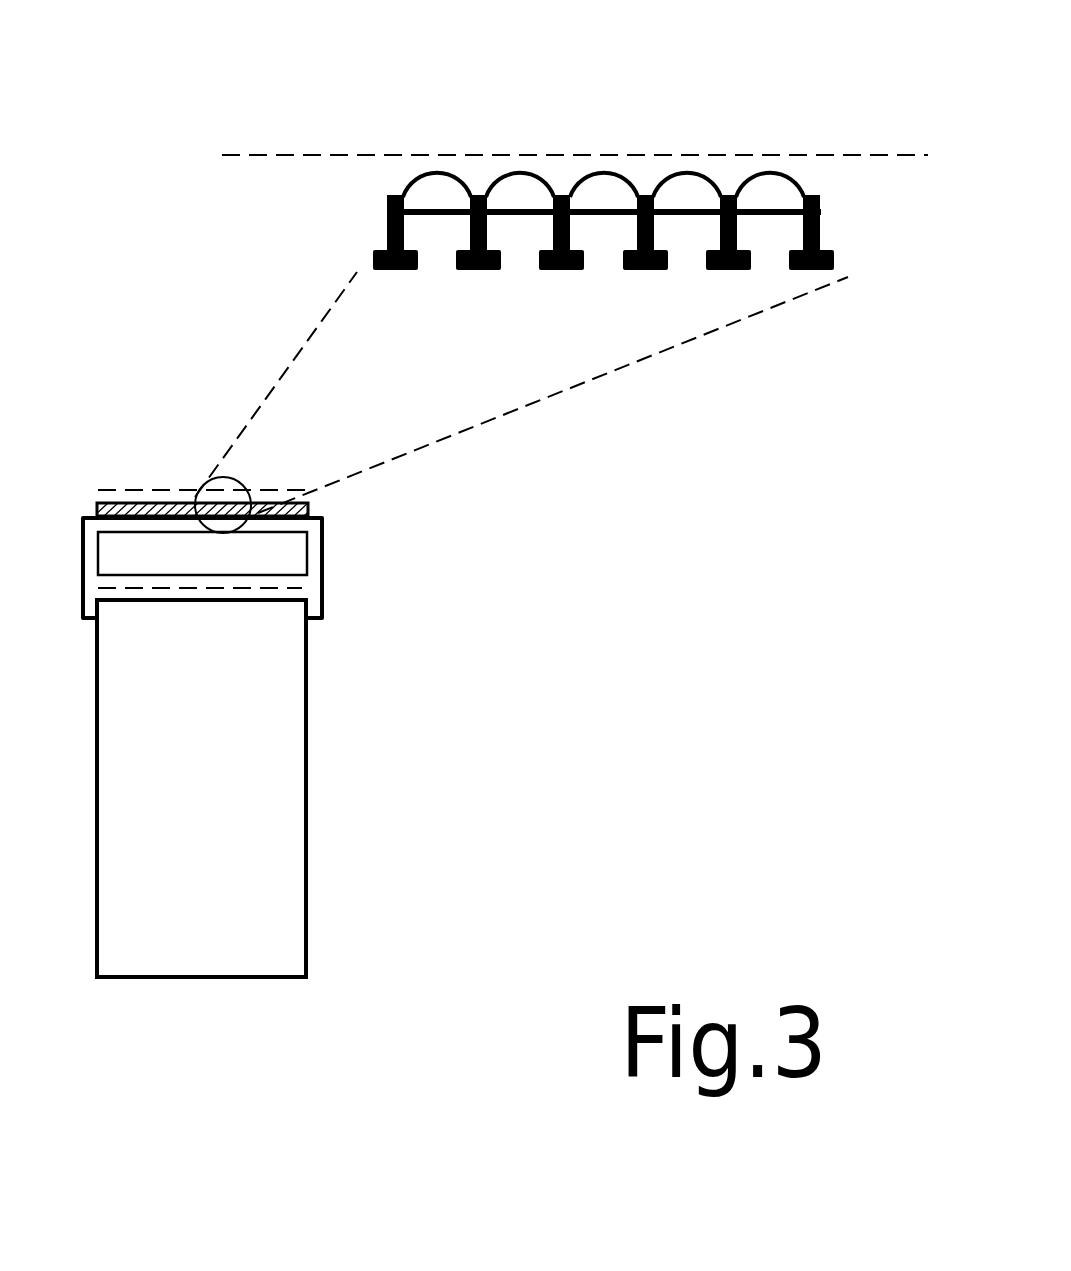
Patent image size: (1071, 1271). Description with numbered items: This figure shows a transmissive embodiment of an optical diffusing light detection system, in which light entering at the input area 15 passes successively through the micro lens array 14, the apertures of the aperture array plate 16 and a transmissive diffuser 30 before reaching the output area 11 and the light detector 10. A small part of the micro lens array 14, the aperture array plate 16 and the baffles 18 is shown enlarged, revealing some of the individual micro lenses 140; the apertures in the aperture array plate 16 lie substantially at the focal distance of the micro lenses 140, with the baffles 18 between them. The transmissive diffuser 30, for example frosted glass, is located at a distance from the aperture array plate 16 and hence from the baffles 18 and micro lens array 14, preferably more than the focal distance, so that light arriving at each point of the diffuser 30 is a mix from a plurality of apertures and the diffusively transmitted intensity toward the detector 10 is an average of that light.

The light detector 10 is at (248, 977).
The output area 11 is at (138, 588).
The micro lens array 14 is at (362, 197).
The input area 15 is at (265, 155).
The aperture array plate 16 is at (362, 268).
The baffles 18 is at (385, 225).
The transmissive diffuser 30 is at (277, 560).
The micro lenses 140 is at (447, 171).